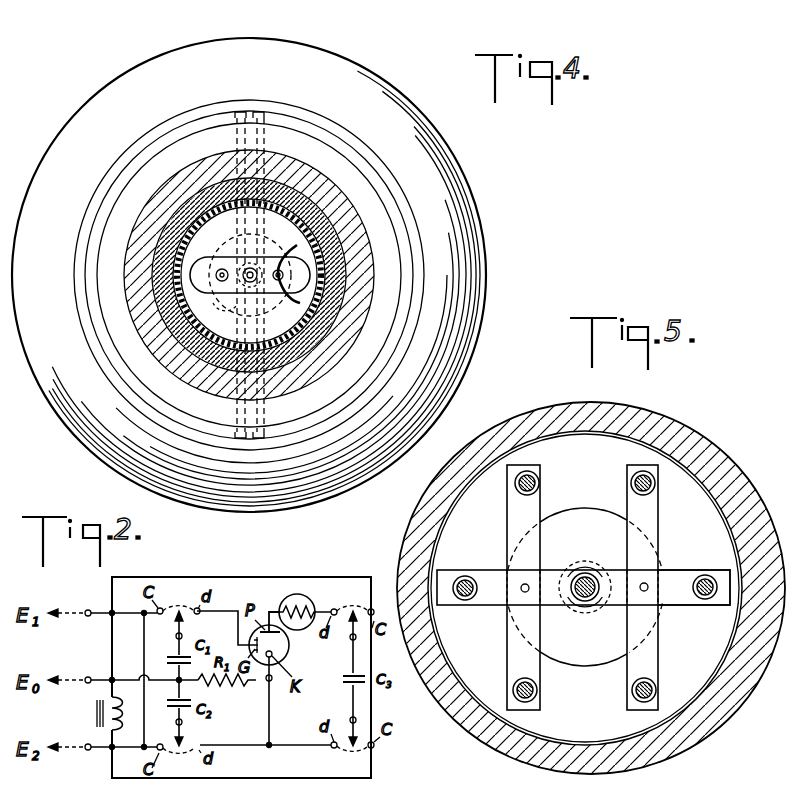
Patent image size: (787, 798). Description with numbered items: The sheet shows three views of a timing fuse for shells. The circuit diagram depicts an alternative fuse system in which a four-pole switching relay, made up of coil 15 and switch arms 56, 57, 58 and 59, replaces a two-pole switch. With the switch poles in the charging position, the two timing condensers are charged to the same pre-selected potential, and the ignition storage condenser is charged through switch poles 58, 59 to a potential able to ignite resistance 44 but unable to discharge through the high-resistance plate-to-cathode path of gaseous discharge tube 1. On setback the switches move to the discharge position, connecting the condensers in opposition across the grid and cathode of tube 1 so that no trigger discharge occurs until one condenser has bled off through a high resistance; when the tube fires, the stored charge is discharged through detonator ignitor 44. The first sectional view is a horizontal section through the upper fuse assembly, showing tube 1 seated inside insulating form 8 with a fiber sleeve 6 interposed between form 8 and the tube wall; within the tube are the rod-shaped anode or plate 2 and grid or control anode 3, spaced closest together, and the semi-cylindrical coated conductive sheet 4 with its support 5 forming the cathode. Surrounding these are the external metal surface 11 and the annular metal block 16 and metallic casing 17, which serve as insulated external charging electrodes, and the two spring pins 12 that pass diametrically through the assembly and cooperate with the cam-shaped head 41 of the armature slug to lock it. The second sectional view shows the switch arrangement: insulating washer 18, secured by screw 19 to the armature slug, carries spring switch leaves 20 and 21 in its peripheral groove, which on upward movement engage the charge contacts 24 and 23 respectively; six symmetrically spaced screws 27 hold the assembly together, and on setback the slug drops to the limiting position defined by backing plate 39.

In FIG. 4, the gaseous discharge tube 1 is at (210, 192).
In FIG. 2, the gaseous discharge tube 1 is at (285, 656).
In FIG. 4, the anode or plate 2 is at (219, 266).
In FIG. 4, the grid or control anode 3 is at (254, 264).
In FIG. 4, the coated conductive sheet 4 is at (279, 267).
In FIG. 4, the cathode support 5 is at (290, 301).
In FIG. 4, the sleeve or tube 6 is at (153, 283).
In FIG. 4, the insulating form 8 is at (152, 251).
In FIG. 4, the external metal surface 11 is at (150, 222).
In FIG. 4, the spring pins 12 is at (258, 112).
In FIG. 2, the coil 15 is at (118, 718).
In FIG. 4, the annular metal block 16 is at (92, 343).
In FIG. 4, the metallic casing 17 is at (72, 418).
In FIG. 5, the metallic casing 17 is at (683, 441).
In FIG. 5, the insulating washer 18 is at (584, 574).
In FIG. 5, the screw 19 is at (580, 601).
In FIG. 5, the spring switch leaf 20 is at (483, 572).
In FIG. 5, the spring switch leaf 21 is at (685, 596).
In FIG. 5, the charge contact 23 is at (648, 519).
In FIG. 5, the charge contact 24 is at (507, 501).
In FIG. 5, the screws 27 is at (532, 478).
In FIG. 5, the backing plate 39 is at (453, 525).
In FIG. 4, the cam-shaped head 41 is at (228, 305).
In FIG. 2, the detonator ignitor 44 is at (308, 602).
In FIG. 2, the switch arm 56 is at (185, 606).
In FIG. 2, the switch arm 57 is at (183, 754).
In FIG. 2, the switch arm 58 is at (366, 604).
In FIG. 2, the switch arm 59 is at (352, 751).